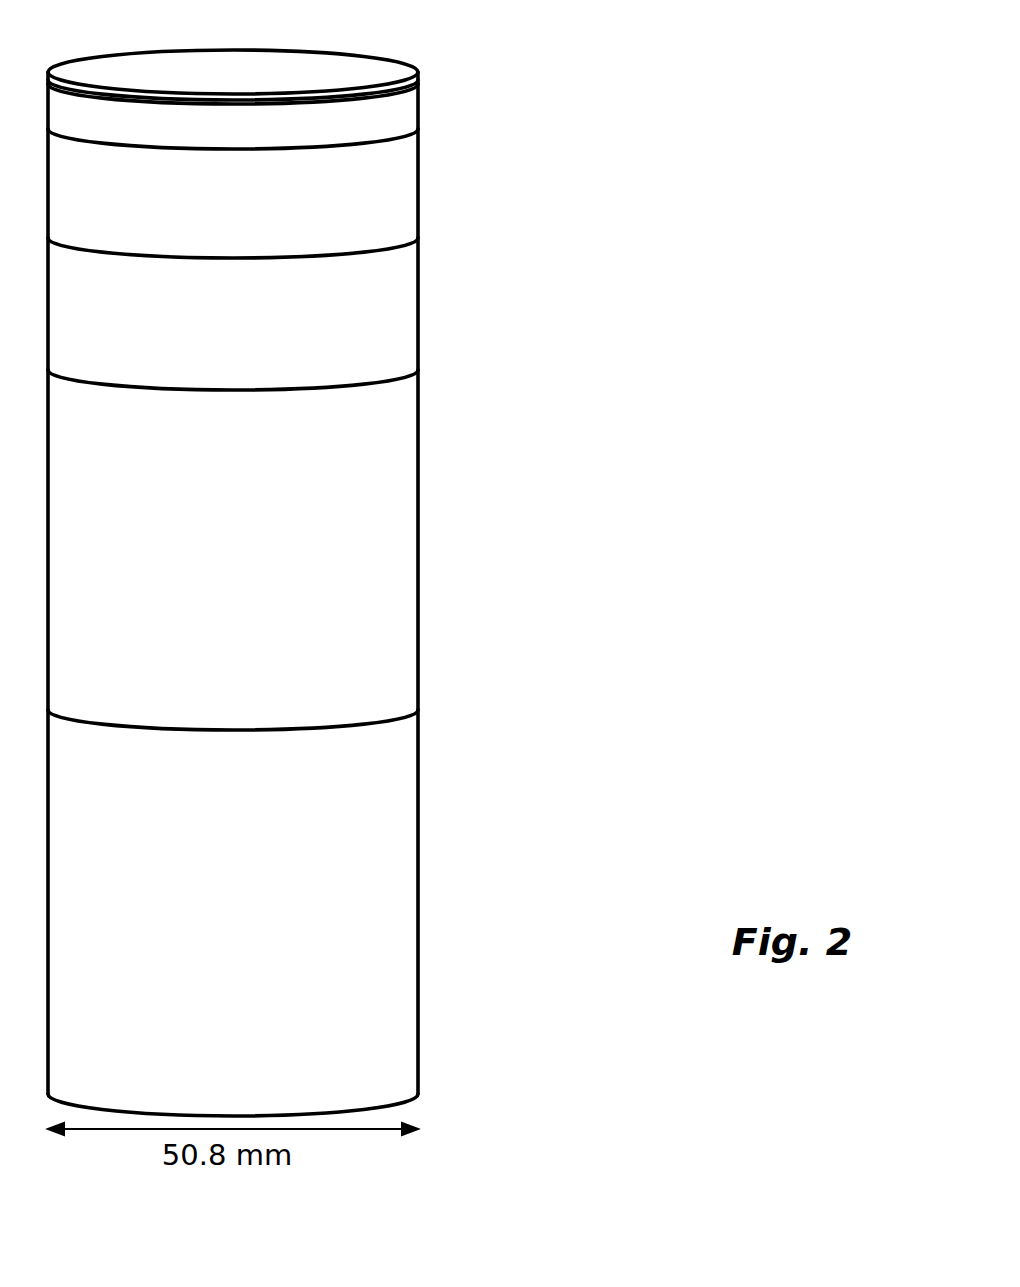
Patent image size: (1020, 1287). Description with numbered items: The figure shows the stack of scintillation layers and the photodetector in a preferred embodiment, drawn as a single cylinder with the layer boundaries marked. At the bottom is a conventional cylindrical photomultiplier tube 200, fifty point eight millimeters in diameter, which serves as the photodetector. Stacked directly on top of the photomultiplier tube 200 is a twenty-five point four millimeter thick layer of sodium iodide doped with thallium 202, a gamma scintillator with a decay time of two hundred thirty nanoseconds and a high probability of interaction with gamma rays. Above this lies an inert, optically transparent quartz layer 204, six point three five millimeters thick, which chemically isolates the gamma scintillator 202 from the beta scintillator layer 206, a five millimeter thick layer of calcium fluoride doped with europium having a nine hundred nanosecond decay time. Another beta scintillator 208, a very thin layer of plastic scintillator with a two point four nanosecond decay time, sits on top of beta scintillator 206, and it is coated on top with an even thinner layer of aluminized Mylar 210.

The photomultiplier tube 200 is at (420, 765).
The sodium iodide doped with thallium layer 202 is at (420, 535).
The quartz layer 204 is at (420, 293).
The beta scintillator layer 206 is at (420, 170).
The beta scintillator 208 is at (420, 110).
The aluminized biaxially-oriented polyethylene terephthalate layer 210 is at (345, 75).